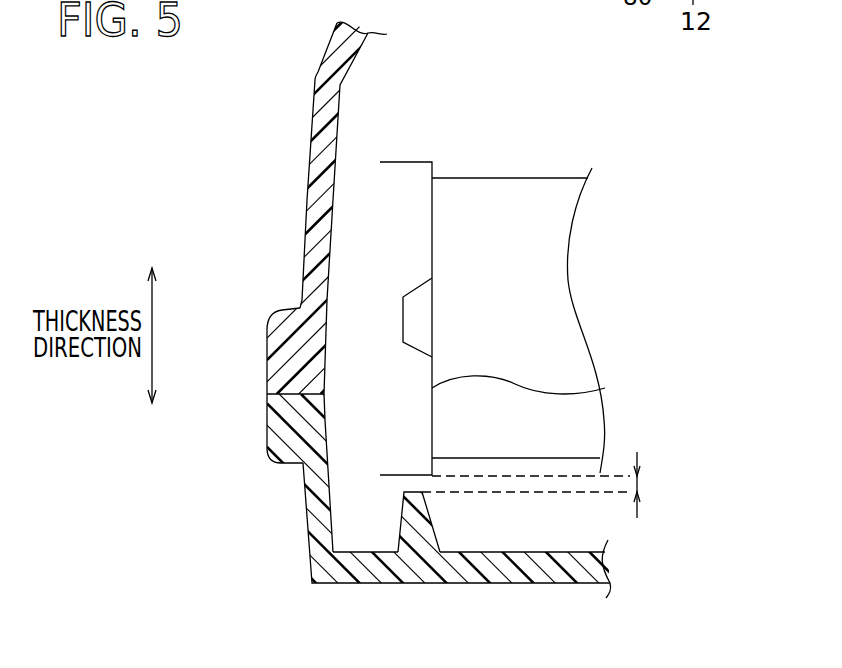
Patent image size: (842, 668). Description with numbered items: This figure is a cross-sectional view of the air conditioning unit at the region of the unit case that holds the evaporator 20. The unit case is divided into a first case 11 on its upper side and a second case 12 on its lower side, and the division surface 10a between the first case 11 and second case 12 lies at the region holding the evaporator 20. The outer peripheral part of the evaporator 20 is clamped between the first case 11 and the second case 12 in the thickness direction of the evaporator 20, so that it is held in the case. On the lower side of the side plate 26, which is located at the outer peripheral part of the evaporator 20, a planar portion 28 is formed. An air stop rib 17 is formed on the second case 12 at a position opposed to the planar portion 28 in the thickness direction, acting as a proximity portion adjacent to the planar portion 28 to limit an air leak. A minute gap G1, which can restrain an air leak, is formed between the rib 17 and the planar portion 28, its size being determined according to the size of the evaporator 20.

The first case 11 is at (313, 185).
The division surface 10a is at (268, 385).
The second case 12 is at (306, 492).
The air stop rib 17 is at (417, 523).
The evaporator 20 is at (556, 172).
The side plate 26 is at (605, 388).
The planar portion 28 is at (398, 478).
The minute gap G1 is at (642, 486).